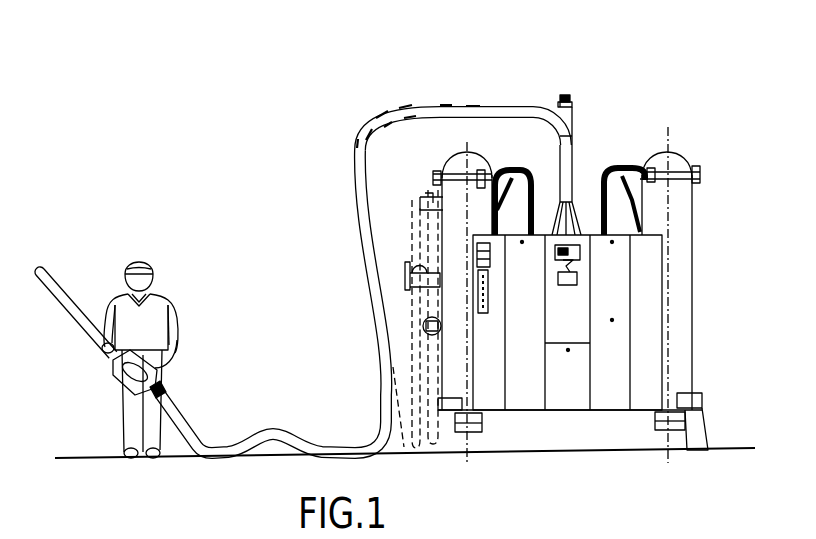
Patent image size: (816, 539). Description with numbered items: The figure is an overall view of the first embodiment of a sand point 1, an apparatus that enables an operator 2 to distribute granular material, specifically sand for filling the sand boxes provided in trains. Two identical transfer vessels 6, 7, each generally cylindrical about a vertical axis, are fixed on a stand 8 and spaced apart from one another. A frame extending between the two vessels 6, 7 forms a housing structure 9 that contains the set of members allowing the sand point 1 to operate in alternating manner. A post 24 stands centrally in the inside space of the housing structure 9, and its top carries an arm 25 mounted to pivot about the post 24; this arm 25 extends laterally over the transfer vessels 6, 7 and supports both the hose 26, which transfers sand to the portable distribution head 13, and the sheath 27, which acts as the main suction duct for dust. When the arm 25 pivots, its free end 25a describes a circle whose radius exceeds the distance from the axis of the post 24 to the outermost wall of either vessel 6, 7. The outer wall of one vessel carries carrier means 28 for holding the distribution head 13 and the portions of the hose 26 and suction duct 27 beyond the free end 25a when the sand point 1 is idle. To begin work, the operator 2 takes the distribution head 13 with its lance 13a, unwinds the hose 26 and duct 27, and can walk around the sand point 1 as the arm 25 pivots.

The sand point 1 is at (518, 244).
The operator 2 is at (179, 288).
The transfer vessel 6 is at (480, 149).
The transfer vessel 7 is at (691, 139).
The stand 8 is at (694, 433).
The housing structure 9 is at (647, 257).
The distribution head 13 is at (96, 382).
The lance 13a is at (45, 259).
The post 24 is at (568, 160).
The arm 25 is at (449, 98).
The free end of the arm 25a is at (376, 113).
The hose 26 is at (273, 301).
The sheath 27 is at (358, 187).
The carrier means 28 is at (427, 207).